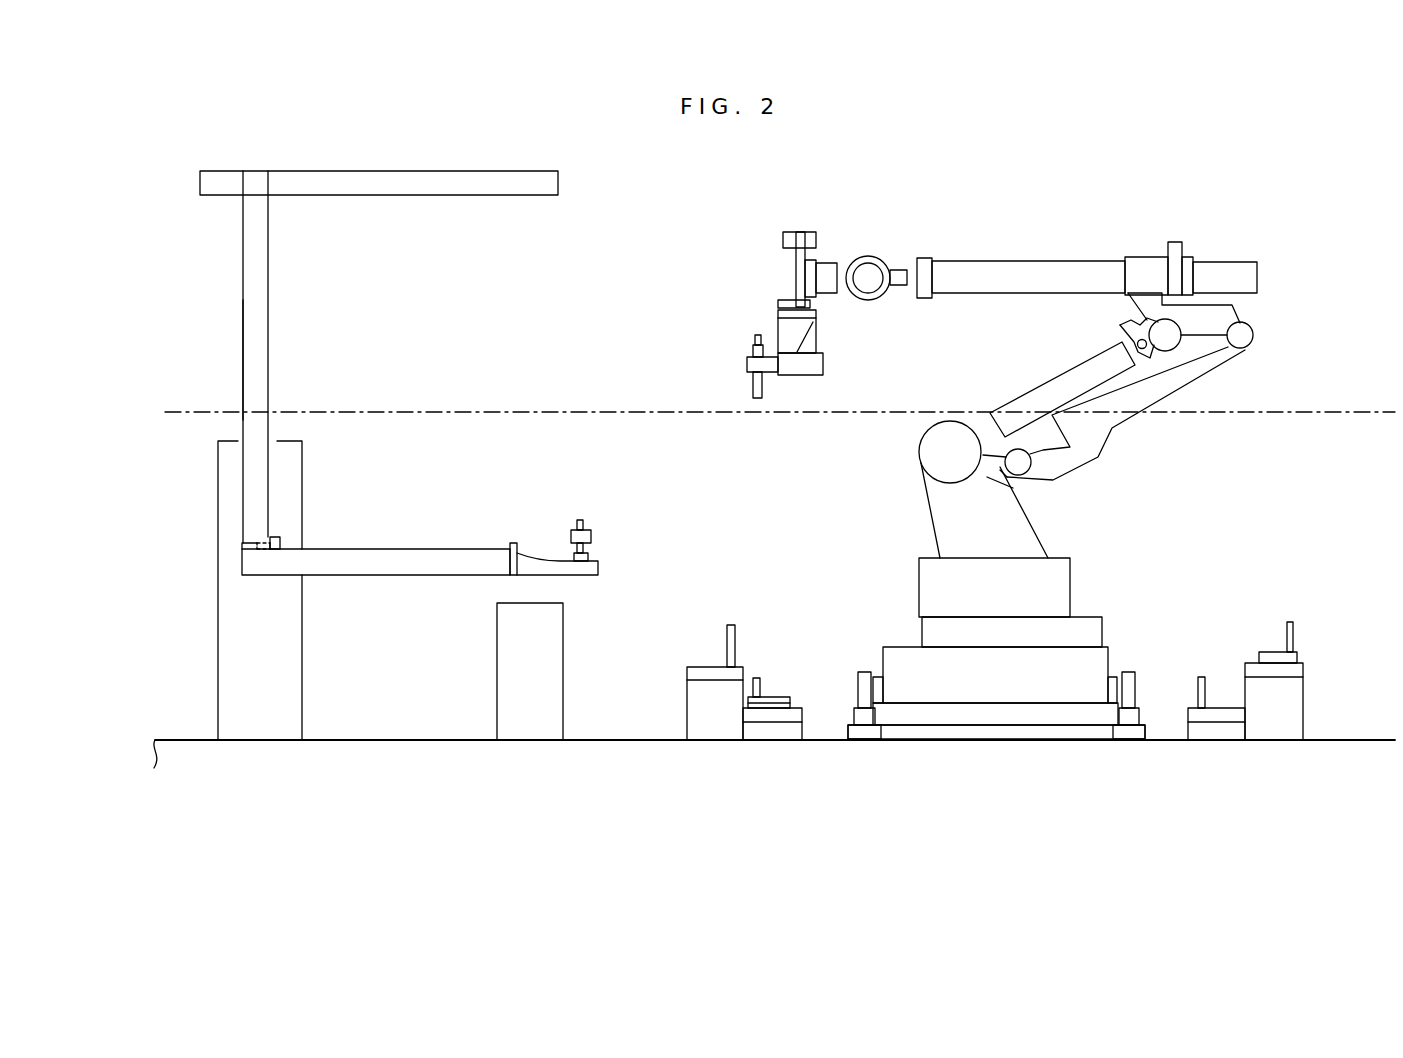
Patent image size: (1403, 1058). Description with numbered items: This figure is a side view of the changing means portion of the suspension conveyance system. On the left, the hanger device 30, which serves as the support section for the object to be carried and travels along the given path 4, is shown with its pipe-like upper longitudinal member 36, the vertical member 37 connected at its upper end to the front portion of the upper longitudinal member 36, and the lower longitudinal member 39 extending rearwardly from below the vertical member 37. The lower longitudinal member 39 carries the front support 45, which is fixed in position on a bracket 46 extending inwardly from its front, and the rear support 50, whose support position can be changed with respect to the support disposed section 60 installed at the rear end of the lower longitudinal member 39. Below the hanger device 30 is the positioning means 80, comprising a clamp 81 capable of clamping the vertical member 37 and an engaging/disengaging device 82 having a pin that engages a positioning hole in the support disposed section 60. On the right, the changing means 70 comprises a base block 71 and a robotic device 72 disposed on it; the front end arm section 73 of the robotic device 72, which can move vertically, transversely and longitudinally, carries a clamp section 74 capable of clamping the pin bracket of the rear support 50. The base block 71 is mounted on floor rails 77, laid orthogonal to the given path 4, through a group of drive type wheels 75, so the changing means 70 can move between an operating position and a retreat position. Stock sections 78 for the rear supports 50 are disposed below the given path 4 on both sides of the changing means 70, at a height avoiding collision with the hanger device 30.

The given path 4 is at (515, 405).
The hanger device 30 is at (242, 307).
The upper longitudinal member 36 is at (318, 183).
The vertical member 37 is at (250, 373).
The lower longitudinal member 39 is at (428, 558).
The front support 45 is at (280, 540).
The bracket 46 is at (272, 550).
The rear support 50 is at (590, 530).
The support disposed section 60 is at (584, 580).
The changing means 70 is at (1034, 468).
The base block 71 is at (1012, 658).
The robotic device 72 is at (1097, 260).
The front end arm section 73 is at (802, 326).
The clamp section 74 is at (770, 377).
The drive type wheels 75 is at (1133, 675).
The floor rails 77 is at (865, 722).
The stock section 78 is at (717, 731).
The positioning means 80 is at (390, 652).
The clamp 81 is at (305, 670).
The engaging/disengaging device 82 is at (494, 663).